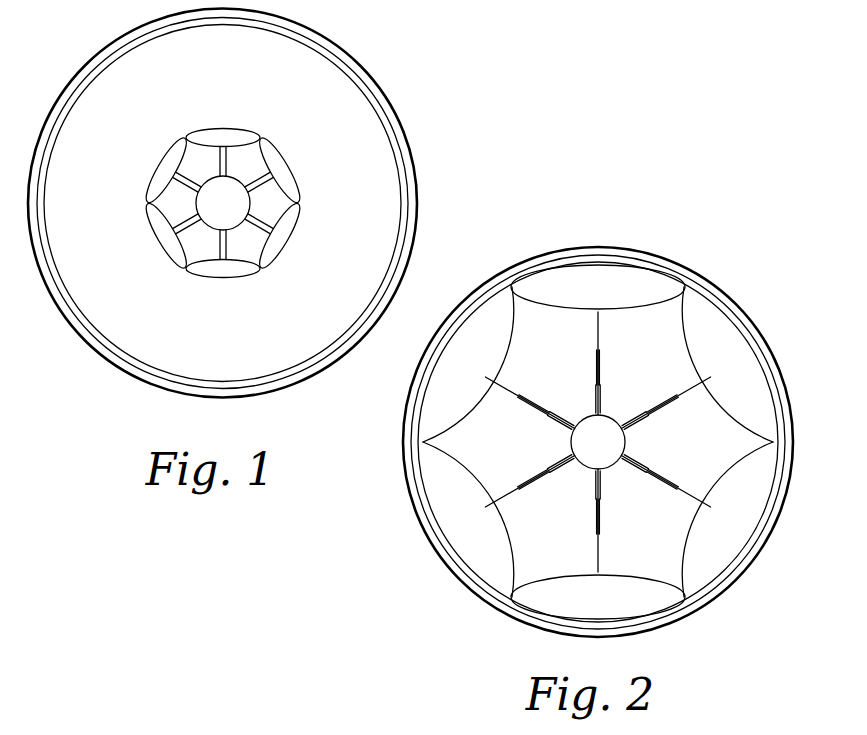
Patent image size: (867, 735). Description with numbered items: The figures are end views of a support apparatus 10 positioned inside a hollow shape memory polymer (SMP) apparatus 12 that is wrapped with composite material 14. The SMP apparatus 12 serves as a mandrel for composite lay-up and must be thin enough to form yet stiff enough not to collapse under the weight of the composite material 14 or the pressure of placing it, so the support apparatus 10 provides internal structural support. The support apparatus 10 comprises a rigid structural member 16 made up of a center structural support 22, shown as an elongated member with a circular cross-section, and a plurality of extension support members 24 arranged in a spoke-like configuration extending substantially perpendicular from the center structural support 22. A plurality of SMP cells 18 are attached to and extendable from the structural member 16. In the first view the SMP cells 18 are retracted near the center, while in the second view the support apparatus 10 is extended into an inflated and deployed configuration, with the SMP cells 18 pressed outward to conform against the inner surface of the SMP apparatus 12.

In FIG. 1, the support apparatus 10 is at (116, 146).
In FIG. 2, the support apparatus 10 is at (674, 200).
In FIG. 1, the shape memory polymer (SMP) apparatus 12 is at (405, 162).
In FIG. 2, the shape memory polymer (SMP) apparatus 12 is at (737, 321).
In FIG. 1, the composite material 14 is at (87, 347).
In FIG. 2, the composite material 14 is at (777, 523).
In FIG. 1, the rigid structural member 16 is at (240, 178).
In FIG. 2, the rigid structural member 16 is at (626, 420).
In FIG. 1, the SMP cells 18 is at (232, 131).
In FIG. 2, the SMP cells 18 is at (448, 513).
In FIG. 1, the center structural support 22 is at (186, 261).
In FIG. 2, the center structural support 22 is at (570, 448).
In FIG. 1, the extension support members 24 is at (248, 249).
In FIG. 2, the extension support members 24 is at (629, 469).